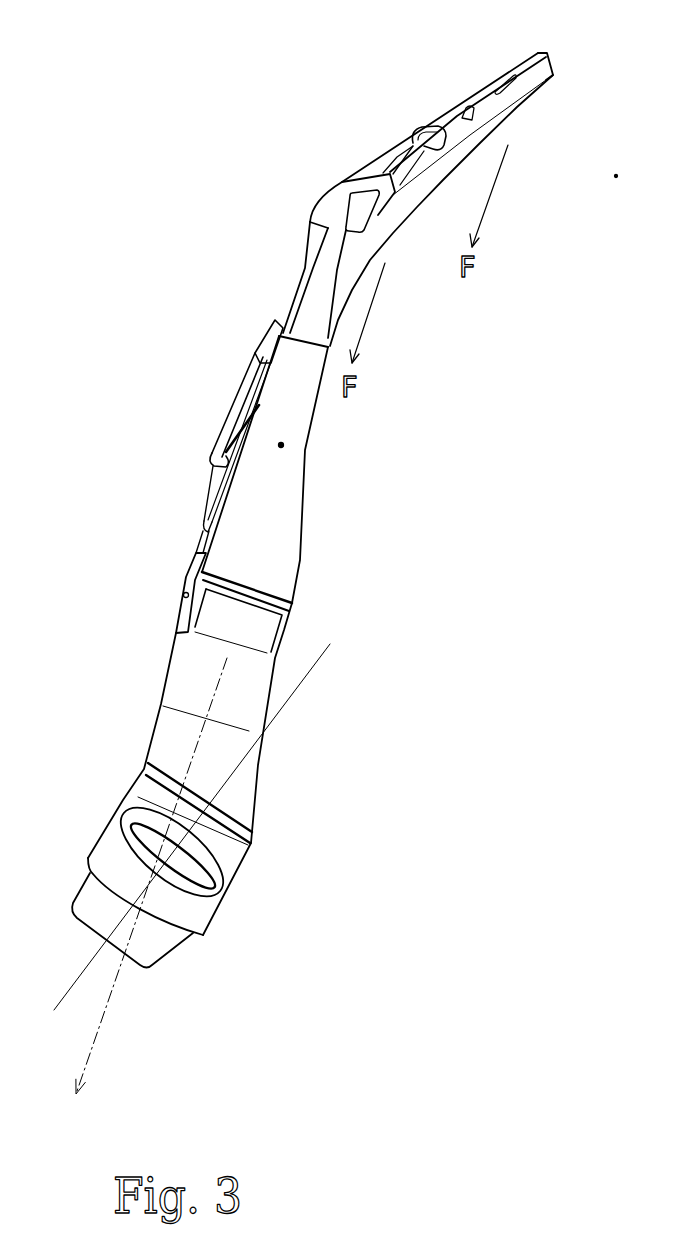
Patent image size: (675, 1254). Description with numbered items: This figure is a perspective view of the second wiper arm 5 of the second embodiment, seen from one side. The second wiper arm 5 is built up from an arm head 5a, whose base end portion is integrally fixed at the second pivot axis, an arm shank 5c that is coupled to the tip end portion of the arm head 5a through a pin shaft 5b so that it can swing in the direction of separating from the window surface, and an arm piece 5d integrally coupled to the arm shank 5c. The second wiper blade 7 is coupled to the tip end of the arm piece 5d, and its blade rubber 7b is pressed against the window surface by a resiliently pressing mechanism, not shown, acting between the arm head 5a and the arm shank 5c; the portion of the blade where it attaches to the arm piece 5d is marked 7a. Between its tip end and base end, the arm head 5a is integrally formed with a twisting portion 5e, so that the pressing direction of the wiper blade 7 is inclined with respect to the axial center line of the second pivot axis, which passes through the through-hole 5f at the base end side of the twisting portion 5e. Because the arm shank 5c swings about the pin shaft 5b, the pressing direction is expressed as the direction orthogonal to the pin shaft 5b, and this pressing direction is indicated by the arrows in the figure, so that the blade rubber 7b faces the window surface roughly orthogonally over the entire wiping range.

The second wiper arm 5 is at (218, 658).
The arm head 5a is at (243, 787).
The pin shaft 5b is at (185, 597).
The arm shank 5c is at (290, 538).
The arm piece 5d is at (317, 293).
The twisting portion 5e is at (245, 705).
The through-hole 5f is at (362, 887).
The second wiper blade 7 is at (430, 179).
The blade attachment clip 7a is at (333, 202).
The blade rubber 7b is at (537, 84).